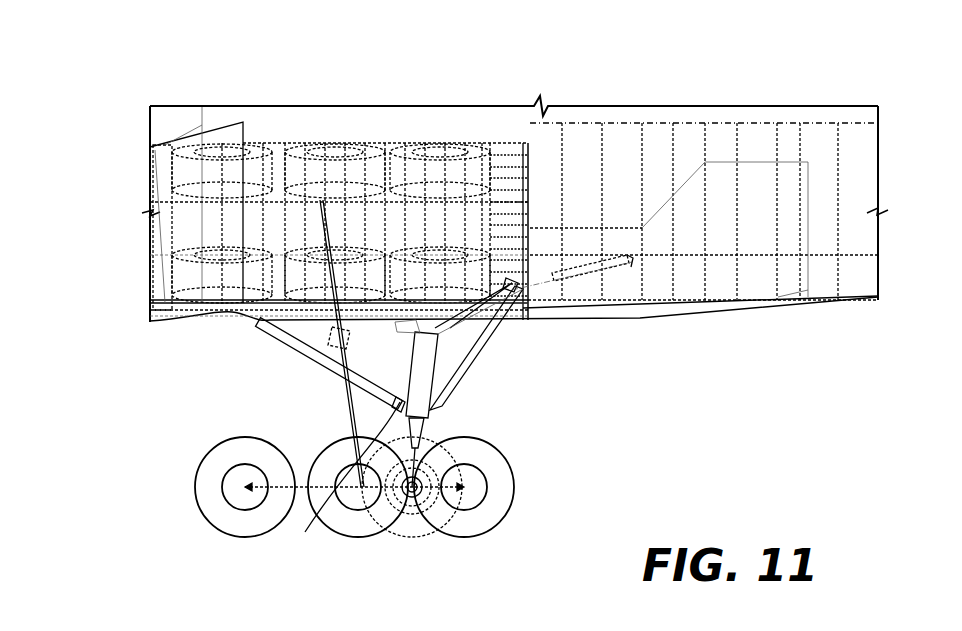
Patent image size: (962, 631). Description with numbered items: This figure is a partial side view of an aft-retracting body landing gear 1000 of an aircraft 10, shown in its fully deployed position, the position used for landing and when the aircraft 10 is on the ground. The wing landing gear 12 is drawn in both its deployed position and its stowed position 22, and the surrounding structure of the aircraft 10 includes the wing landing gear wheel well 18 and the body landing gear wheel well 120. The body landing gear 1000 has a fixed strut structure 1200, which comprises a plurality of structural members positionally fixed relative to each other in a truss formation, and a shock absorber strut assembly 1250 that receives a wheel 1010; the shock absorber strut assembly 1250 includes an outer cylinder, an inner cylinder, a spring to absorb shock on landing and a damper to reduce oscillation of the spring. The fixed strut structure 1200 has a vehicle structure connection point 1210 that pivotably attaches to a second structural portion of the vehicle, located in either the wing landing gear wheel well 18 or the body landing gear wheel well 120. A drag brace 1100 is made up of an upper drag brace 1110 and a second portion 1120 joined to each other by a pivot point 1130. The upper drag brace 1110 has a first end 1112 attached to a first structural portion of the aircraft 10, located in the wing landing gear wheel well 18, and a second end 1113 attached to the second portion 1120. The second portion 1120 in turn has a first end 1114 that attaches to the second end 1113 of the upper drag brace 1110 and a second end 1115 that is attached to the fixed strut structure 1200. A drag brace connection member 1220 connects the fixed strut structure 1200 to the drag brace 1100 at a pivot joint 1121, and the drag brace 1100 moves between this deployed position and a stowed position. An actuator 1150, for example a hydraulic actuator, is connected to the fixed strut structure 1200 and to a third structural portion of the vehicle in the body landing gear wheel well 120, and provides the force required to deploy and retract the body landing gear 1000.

The aircraft 10 is at (823, 84).
The wing landing gear 12 is at (192, 163).
The wing landing gear wheel well 18 is at (193, 233).
The stowed position 22 is at (193, 177).
The body landing gear wheel well 120 is at (790, 185).
The body landing gear 1000 is at (486, 350).
The wheel 1010 is at (403, 522).
The drag brace 1100 is at (256, 326).
The upper drag brace 1110 is at (372, 330).
The first end 1112 is at (397, 323).
The second end 1113 is at (271, 333).
The first end 1114 is at (150, 320).
The second end 1115 is at (352, 481).
The second portion 1120 is at (317, 353).
The pivot joint 1121 is at (352, 481).
The pivot point 1130 is at (271, 333).
The actuator 1150 is at (615, 265).
The fixed strut structure 1200 is at (452, 383).
The vehicle structure connection point 1210 is at (513, 278).
The drag brace connection member 1220 is at (385, 400).
The shock absorber strut assembly 1250 is at (425, 360).